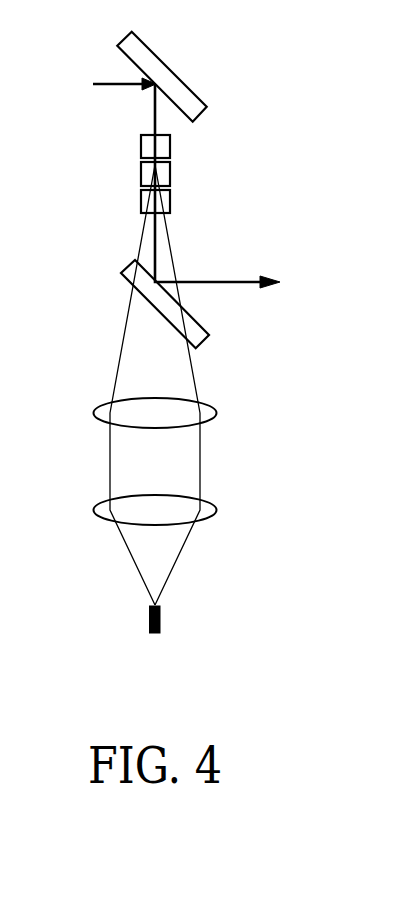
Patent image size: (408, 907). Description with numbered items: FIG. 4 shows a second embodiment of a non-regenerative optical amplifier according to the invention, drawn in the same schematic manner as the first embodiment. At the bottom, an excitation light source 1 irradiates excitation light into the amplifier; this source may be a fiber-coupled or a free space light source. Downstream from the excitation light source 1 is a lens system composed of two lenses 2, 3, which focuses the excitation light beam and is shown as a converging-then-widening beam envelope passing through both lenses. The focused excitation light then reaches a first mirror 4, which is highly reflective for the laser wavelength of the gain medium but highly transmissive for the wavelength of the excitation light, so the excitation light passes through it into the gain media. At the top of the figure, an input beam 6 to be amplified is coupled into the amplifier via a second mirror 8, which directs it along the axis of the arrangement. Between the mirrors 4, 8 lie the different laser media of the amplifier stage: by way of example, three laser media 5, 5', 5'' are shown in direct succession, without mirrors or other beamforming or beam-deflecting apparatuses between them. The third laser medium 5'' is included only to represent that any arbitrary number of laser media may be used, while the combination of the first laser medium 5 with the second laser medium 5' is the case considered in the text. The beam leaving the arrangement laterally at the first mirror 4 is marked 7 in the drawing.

The excitation light source 1 is at (147, 627).
The lens 2 is at (93, 510).
The lens 3 is at (93, 414).
The first mirror 4 is at (121, 275).
The first laser medium 5 is at (176, 145).
The second laser medium 5' is at (179, 172).
The third laser medium 5'' is at (182, 199).
The input beam 6 is at (93, 84).
The outgoing beam 7 is at (268, 275).
The second mirror 8 is at (118, 46).